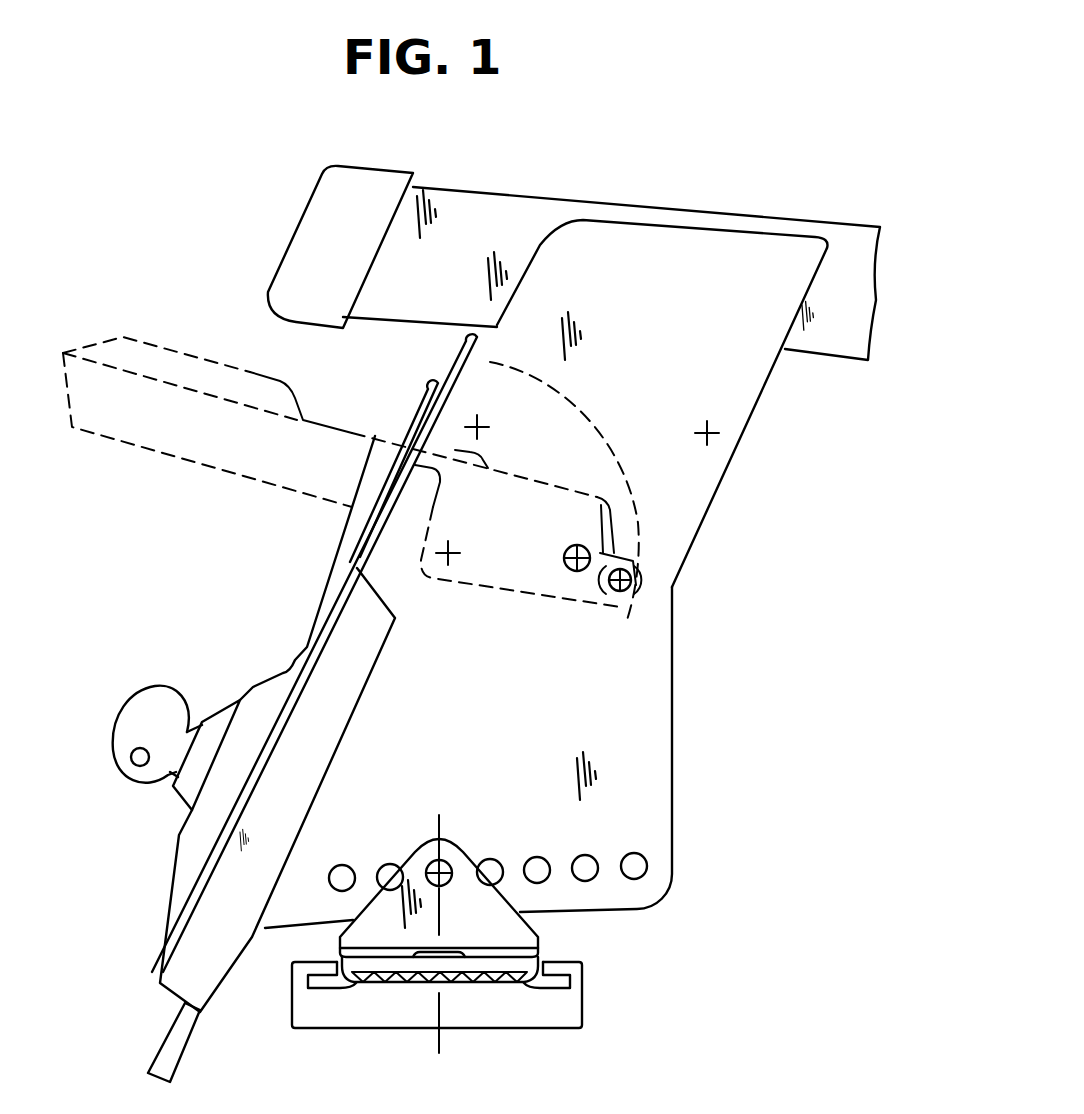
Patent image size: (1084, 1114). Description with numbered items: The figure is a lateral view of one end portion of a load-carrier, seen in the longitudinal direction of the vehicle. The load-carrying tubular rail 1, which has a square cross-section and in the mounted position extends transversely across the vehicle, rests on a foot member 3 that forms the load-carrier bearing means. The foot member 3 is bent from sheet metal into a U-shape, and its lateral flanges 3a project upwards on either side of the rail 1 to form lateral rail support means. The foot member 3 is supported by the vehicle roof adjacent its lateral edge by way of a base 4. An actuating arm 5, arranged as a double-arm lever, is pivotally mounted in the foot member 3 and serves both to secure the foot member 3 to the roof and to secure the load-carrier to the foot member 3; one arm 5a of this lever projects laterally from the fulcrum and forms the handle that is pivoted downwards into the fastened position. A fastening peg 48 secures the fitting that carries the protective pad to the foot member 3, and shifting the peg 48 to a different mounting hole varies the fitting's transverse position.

The load-carrying tubular rail 1 is at (628, 222).
The foot member 3 is at (640, 687).
The lateral flanges 3a is at (677, 540).
The base 4 is at (570, 1013).
The actuating arm 5 is at (298, 662).
The handle arm 5a is at (150, 428).
The fastening peg 48 is at (453, 862).